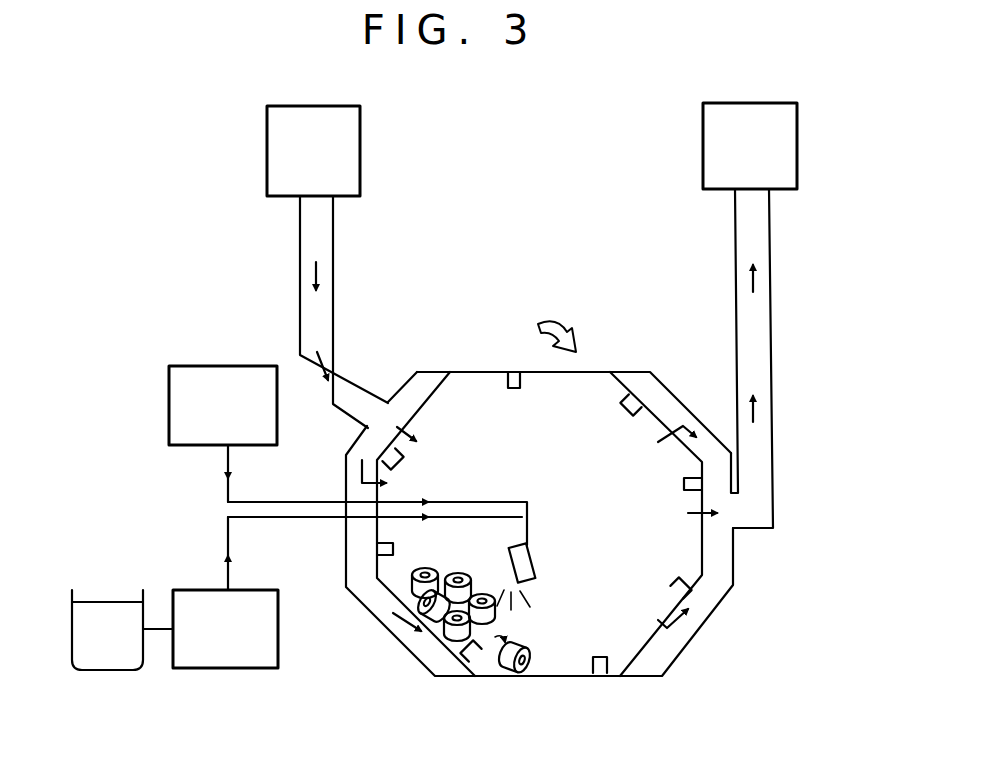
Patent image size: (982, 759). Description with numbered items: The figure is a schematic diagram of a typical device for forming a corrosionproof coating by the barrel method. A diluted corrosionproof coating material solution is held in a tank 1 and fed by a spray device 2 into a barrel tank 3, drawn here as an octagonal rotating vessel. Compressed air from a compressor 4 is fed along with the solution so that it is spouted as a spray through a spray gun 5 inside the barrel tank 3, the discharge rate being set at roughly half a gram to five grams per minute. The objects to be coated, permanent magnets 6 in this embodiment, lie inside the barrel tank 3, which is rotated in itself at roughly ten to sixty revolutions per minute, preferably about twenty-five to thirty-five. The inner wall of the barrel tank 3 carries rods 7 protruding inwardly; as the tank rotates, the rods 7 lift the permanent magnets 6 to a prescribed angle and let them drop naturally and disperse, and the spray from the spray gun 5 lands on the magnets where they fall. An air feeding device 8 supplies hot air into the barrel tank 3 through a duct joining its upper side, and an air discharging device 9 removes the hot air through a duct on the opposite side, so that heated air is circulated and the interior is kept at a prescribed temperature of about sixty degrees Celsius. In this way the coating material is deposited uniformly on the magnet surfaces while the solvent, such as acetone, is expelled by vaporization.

The tank 1 is at (106, 658).
The spray device 2 is at (228, 660).
The barrel tank 3 is at (488, 386).
The compressor 4 is at (186, 414).
The spray gun 5 is at (533, 553).
The permanent magnets 6 is at (447, 645).
The rods 7 is at (593, 680).
The air feeding device 8 is at (346, 148).
The air discharging device 9 is at (786, 132).